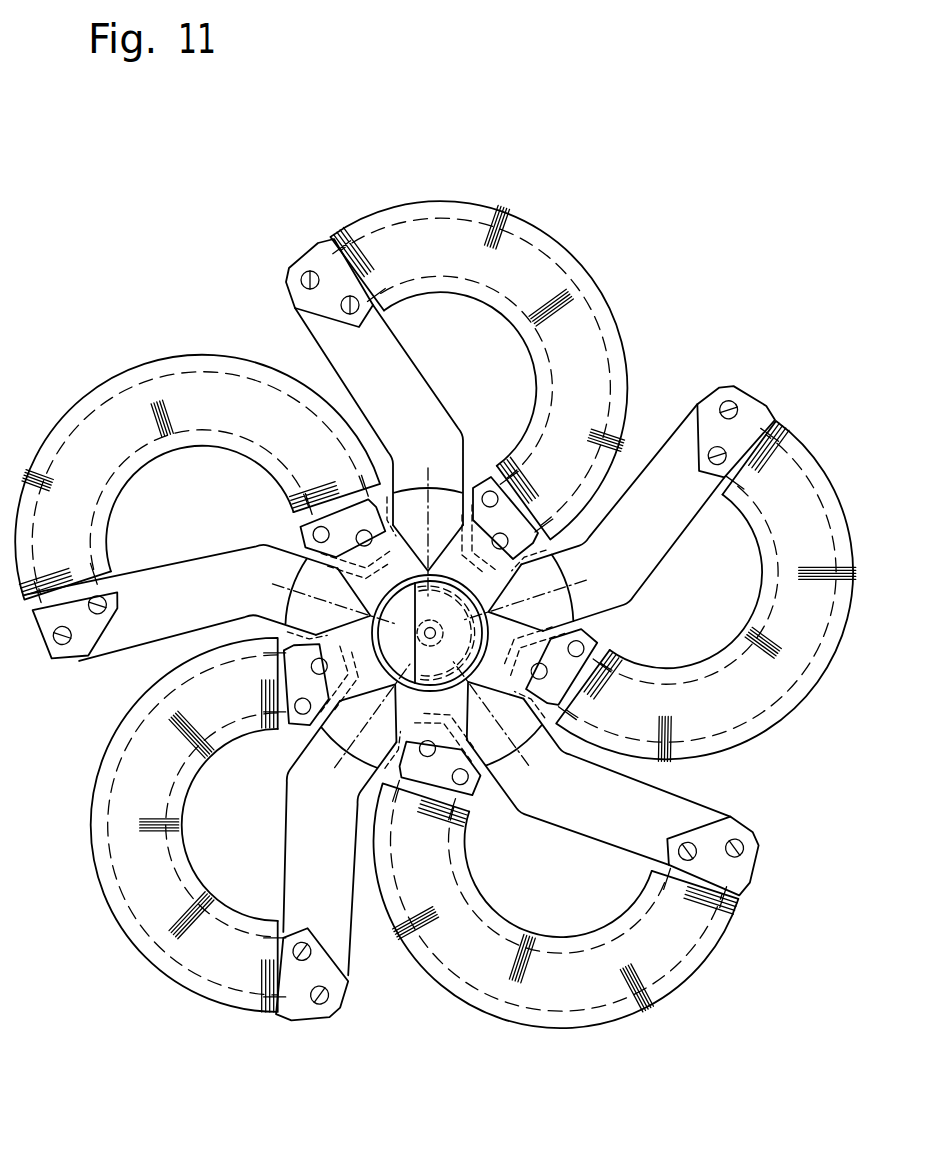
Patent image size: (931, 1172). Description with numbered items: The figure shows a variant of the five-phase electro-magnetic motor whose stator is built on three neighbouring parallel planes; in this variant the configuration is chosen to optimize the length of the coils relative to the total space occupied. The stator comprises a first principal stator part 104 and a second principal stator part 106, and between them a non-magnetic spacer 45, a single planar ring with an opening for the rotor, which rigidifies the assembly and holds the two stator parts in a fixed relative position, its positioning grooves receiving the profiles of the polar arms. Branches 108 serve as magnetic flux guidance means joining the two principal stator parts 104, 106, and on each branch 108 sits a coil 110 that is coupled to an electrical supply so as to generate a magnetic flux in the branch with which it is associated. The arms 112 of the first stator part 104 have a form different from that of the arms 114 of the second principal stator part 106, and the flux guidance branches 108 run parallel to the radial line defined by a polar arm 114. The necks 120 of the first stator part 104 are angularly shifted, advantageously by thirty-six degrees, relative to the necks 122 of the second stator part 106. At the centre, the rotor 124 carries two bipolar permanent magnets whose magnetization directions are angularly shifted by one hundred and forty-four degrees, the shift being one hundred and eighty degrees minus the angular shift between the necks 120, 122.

The non-magnetic spacer 45 is at (412, 578).
The first principal stator part 104 is at (301, 532).
The second principal stator part 106 is at (662, 423).
The branch 108 is at (593, 300).
The coil 110 is at (540, 232).
The arm of the first stator part 112 is at (373, 678).
The arm of the second principal stator part 114 is at (648, 806).
The neck of the first principal stator part 120 is at (483, 702).
The neck of the second principal stator part 122 is at (497, 656).
The rotor 124 is at (407, 633).